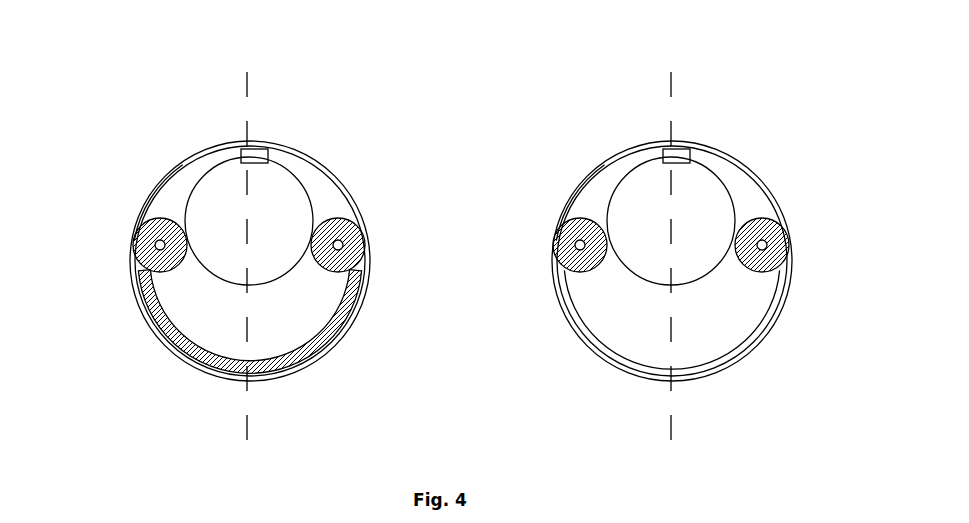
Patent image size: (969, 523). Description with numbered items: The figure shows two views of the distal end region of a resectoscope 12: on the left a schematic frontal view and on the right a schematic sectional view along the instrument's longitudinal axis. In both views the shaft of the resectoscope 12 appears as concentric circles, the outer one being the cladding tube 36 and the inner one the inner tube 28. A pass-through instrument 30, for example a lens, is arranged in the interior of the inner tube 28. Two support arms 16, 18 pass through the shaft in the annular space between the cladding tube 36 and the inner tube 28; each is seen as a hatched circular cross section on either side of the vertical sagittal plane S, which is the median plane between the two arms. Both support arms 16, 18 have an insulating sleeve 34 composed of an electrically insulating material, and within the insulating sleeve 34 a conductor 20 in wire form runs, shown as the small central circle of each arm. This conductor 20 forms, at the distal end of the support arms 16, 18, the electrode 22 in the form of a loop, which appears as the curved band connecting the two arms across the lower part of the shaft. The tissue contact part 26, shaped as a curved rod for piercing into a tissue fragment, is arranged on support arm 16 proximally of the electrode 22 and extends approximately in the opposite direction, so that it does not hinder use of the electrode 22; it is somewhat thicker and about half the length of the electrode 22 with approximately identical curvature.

The resectoscope 12 is at (172, 73).
The support arm 16 is at (356, 219).
The support arm 18 is at (134, 248).
The conductor 20 is at (558, 263).
The electrode 22 is at (195, 367).
The tissue contact part 26 is at (312, 162).
The inner tube 28 is at (185, 158).
The pass-through instrument 30 is at (254, 200).
The insulating sleeve 34 is at (133, 251).
The cladding tube 36 is at (139, 194).
The sagittal plane S is at (460, 259).